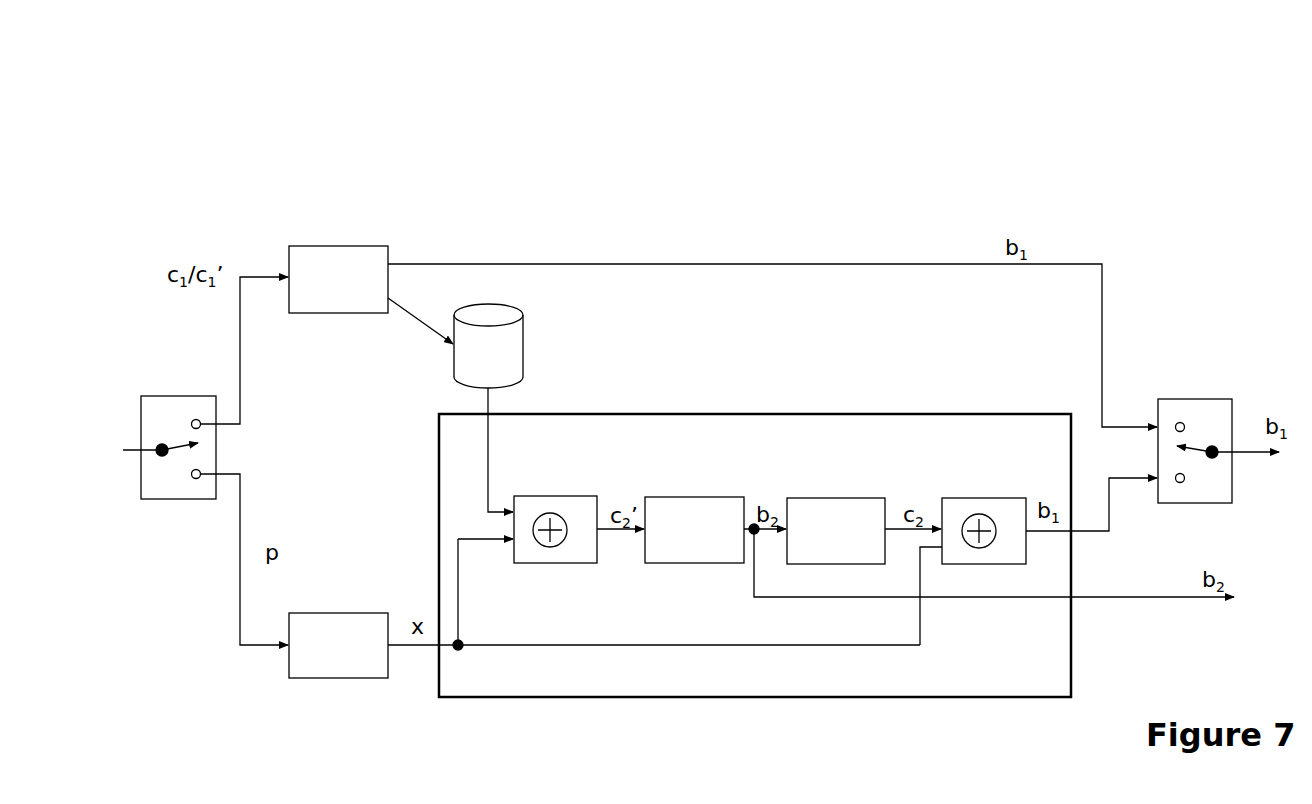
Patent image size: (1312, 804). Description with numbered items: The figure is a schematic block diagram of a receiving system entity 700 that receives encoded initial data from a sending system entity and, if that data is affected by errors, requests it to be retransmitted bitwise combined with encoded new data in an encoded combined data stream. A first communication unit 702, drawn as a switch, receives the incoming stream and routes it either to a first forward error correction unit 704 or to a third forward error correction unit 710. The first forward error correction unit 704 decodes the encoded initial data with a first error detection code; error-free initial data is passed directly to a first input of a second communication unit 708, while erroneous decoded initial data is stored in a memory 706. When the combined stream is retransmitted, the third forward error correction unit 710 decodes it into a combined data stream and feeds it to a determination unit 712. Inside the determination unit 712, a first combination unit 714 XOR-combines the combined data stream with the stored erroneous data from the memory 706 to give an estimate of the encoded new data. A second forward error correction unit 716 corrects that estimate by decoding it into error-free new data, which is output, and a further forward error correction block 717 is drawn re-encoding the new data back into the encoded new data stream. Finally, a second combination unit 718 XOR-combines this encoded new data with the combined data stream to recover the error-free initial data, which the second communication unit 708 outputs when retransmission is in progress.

The receiving system entity 700 is at (876, 206).
The first communication unit 702 is at (157, 396).
The first forward error correction unit 704 is at (339, 246).
The memory 706 is at (523, 353).
The second communication unit 708 is at (1213, 399).
The third forward error correction unit 710 is at (354, 680).
The determination unit 712 is at (833, 414).
The first combination unit 714 is at (579, 496).
The second forward error correction unit 716 is at (693, 497).
The second FEC(2) encoder 717 is at (835, 498).
The second combination unit 718 is at (992, 498).